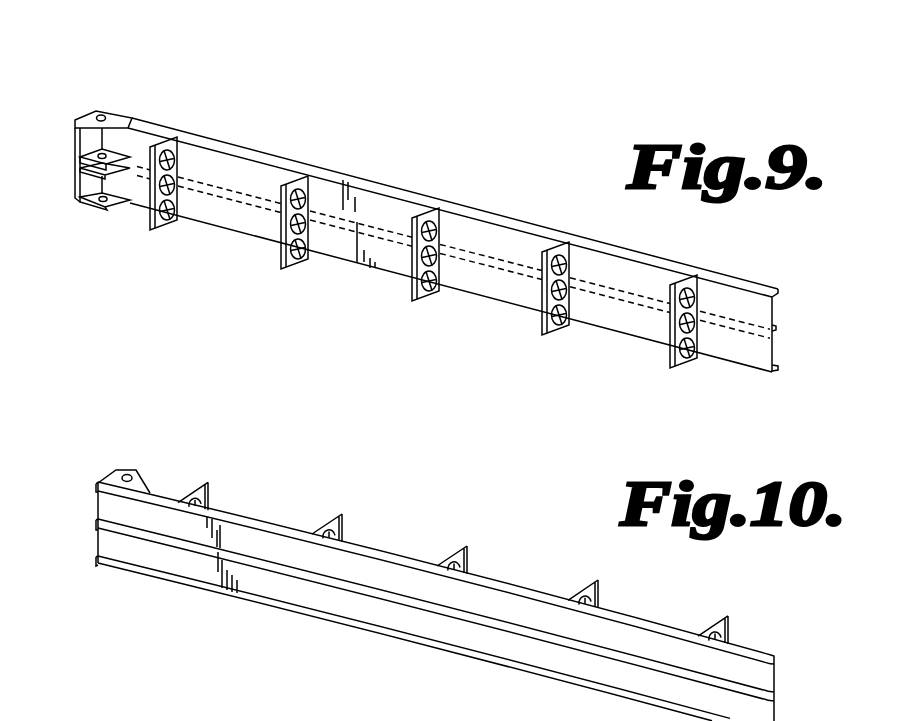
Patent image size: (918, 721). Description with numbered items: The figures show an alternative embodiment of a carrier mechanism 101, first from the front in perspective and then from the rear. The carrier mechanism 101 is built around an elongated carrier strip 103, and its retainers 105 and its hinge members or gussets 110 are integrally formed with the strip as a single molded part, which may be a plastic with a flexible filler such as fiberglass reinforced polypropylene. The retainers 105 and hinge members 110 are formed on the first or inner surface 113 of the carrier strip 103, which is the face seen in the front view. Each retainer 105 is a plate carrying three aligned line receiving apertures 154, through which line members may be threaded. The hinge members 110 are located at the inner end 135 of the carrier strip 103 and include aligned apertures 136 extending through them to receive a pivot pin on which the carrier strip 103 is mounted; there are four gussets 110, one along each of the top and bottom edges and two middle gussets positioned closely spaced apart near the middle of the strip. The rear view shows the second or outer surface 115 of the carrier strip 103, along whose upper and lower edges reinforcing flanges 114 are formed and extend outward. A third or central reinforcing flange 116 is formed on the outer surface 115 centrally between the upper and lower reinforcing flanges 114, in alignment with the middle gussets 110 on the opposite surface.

In FIG. 10, the carrier mechanism 101 is at (487, 496).
In FIG. 9, the carrier strip 103 is at (242, 158).
In FIG. 10, the carrier strip 103 is at (400, 618).
In FIG. 9, the retainer 105 is at (149, 233).
In FIG. 10, the retainer 105 is at (203, 485).
In FIG. 9, the hinge member 110 is at (82, 165).
In FIG. 10, the hinge member 110 is at (132, 470).
In FIG. 9, the inner surface 113 is at (455, 262).
In FIG. 9, the reinforcing flange 114 is at (773, 290).
In FIG. 10, the outer surface 115 is at (503, 645).
In FIG. 10, the central reinforcing flange 116 is at (580, 652).
In FIG. 9, the inner end 135 is at (104, 110).
In FIG. 9, the aligned apertures 136 is at (101, 114).
In FIG. 9, the line receiving aperture 154 is at (304, 258).